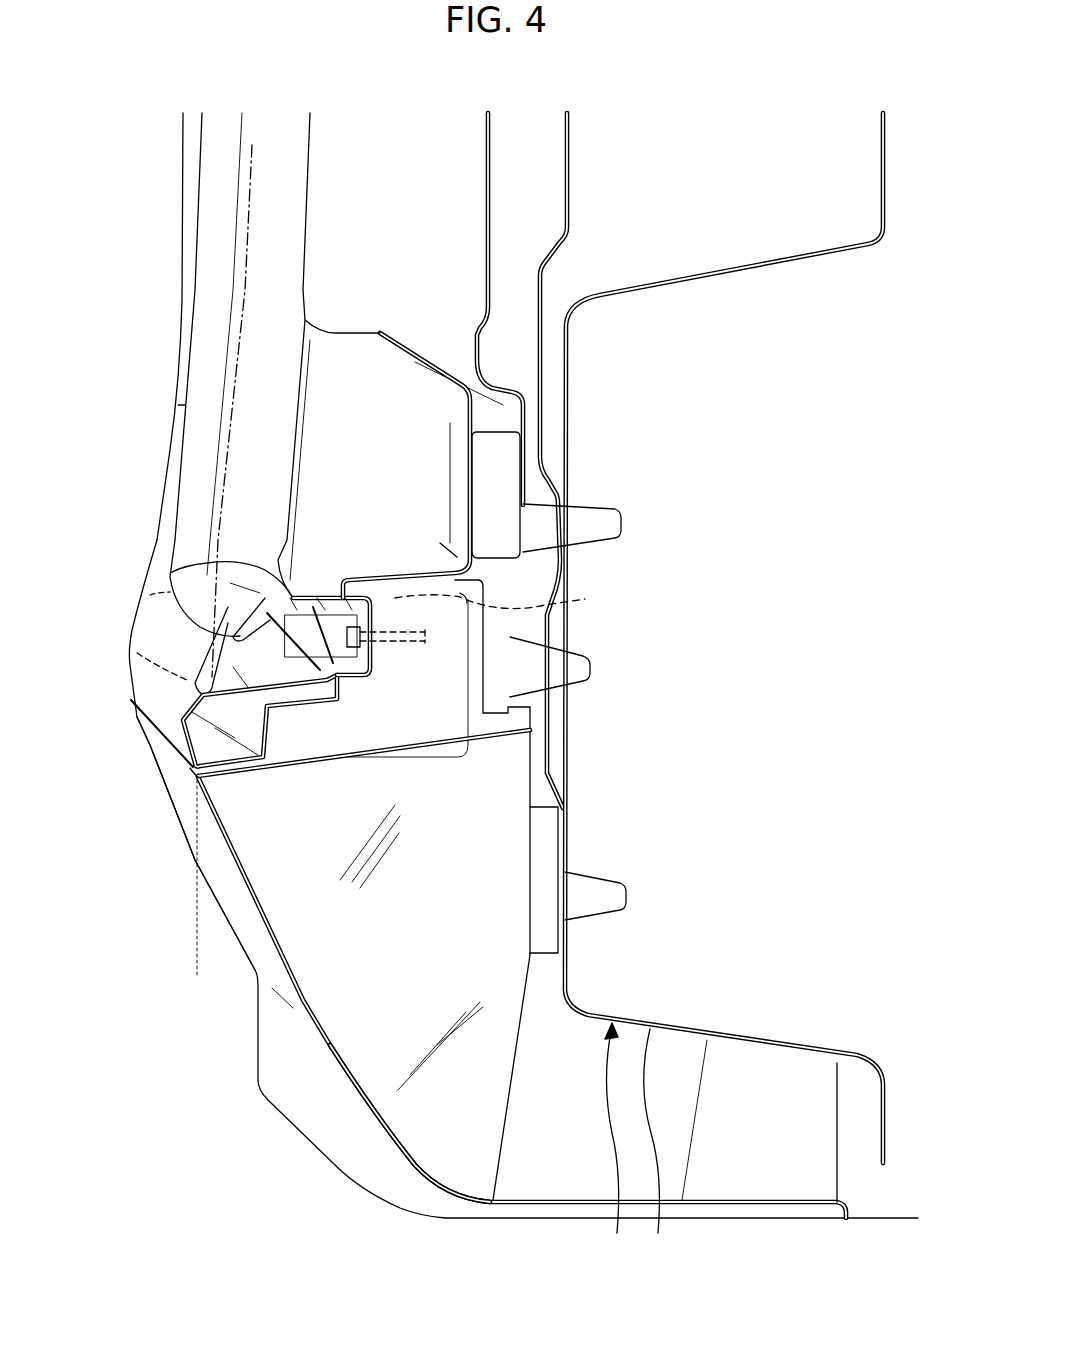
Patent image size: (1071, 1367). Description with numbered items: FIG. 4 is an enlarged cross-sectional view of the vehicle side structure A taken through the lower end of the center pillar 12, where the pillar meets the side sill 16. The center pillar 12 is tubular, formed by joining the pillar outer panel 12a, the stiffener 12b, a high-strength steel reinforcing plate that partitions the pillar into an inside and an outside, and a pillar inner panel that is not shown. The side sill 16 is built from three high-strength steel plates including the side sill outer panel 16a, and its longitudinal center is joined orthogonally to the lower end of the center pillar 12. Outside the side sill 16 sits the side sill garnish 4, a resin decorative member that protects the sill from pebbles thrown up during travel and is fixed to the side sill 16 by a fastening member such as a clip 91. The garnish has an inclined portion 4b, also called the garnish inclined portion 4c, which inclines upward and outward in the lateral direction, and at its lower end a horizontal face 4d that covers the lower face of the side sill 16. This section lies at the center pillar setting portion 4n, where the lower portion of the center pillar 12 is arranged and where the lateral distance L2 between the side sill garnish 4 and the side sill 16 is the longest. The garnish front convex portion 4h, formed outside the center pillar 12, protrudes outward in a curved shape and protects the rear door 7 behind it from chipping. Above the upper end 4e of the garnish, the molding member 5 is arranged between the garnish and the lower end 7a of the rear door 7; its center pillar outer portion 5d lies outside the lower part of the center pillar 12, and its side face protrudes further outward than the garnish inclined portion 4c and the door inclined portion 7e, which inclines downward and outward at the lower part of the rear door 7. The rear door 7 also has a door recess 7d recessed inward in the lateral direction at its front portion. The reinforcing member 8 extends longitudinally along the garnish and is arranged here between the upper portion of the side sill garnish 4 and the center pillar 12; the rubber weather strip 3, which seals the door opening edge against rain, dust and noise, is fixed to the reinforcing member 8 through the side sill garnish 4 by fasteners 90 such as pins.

The vehicle side structure A is at (145, 137).
The weather strip 3 is at (207, 563).
The side sill garnish 4 is at (358, 1109).
The inclined portion 4b is at (312, 1020).
The garnish inclined portion 4c is at (410, 1123).
The horizontal face 4d is at (802, 1222).
The upper end 4e is at (190, 768).
The garnish front convex portion 4h is at (187, 805).
The center pillar setting portion 4n is at (237, 872).
The molding member 5 is at (127, 708).
The center pillar outer portion 5d is at (130, 695).
The rear door 7 is at (240, 305).
The lower end 7a is at (143, 657).
The door recess 7d is at (240, 372).
The door inclined portion 7e is at (165, 592).
The reinforcing member 8 is at (497, 537).
The center pillar 12 is at (500, 187).
The pillar outer panel 12a is at (484, 152).
The stiffener 12b is at (563, 150).
The side sill 16 is at (612, 1144).
The side sill outer panel 16a is at (662, 1147).
The fasteners 90 is at (506, 600).
The clip 91 is at (592, 508).
The distance L2 is at (563, 965).